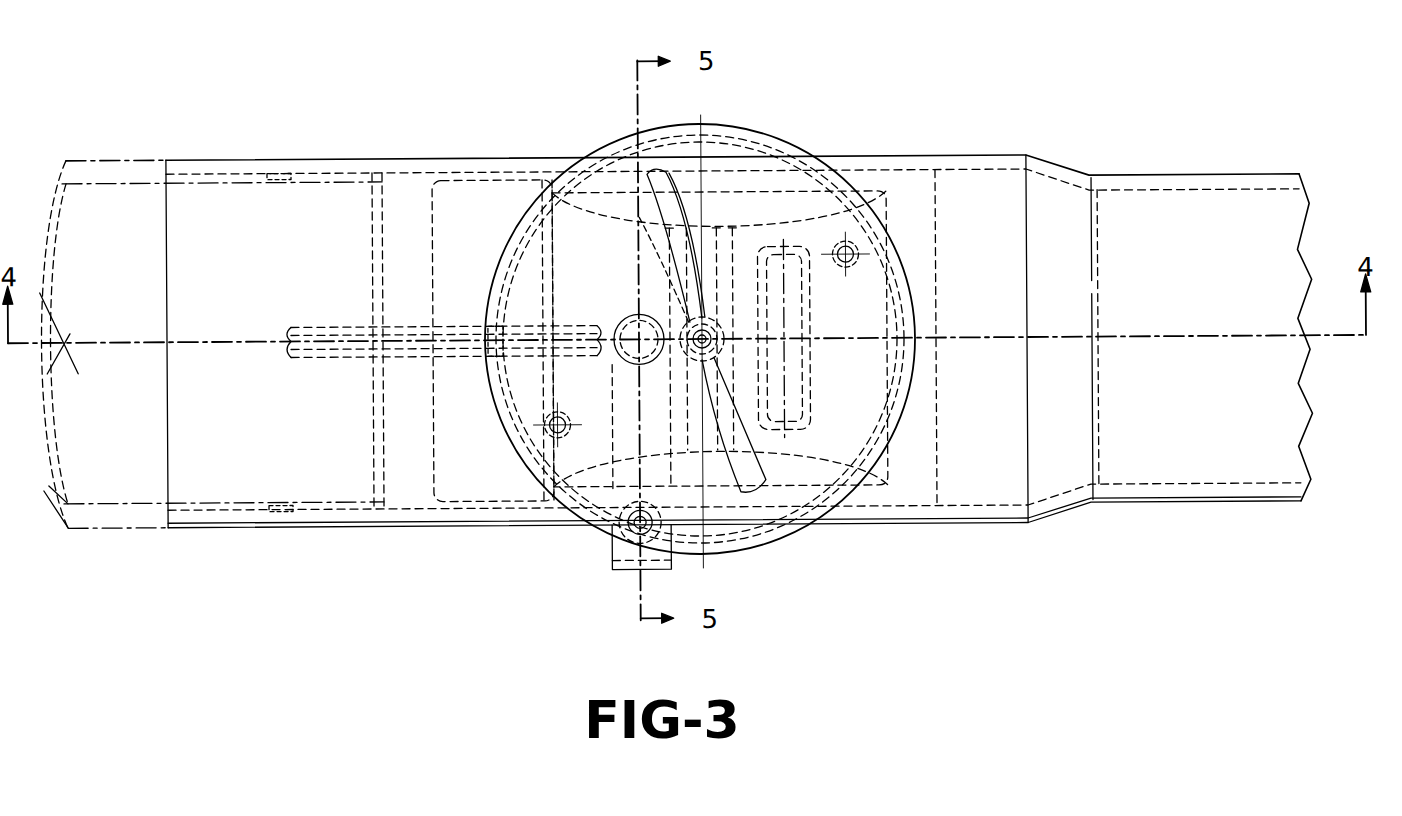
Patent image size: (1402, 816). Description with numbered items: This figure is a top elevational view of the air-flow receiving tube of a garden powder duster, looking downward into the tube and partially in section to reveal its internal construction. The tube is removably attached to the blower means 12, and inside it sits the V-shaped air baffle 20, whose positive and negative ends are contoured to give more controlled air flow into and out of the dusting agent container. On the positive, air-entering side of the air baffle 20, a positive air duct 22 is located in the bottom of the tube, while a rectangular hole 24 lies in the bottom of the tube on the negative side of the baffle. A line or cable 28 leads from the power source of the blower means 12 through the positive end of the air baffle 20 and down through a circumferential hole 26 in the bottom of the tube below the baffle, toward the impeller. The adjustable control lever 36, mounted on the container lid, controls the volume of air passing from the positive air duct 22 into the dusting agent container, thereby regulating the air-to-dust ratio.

The blower means 12 is at (83, 156).
The air baffle 20 is at (760, 213).
The positive air duct 22 is at (632, 322).
The rectangular hole 24 is at (810, 400).
The circumferential hole 26 is at (690, 326).
The line 28 is at (328, 325).
The control lever 36 is at (612, 551).